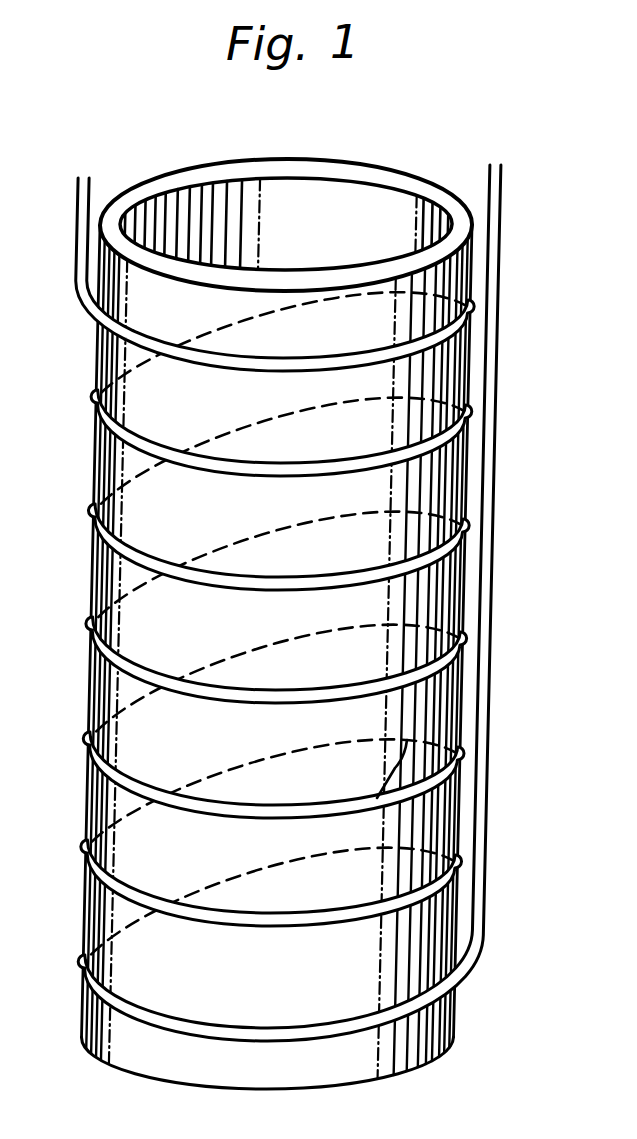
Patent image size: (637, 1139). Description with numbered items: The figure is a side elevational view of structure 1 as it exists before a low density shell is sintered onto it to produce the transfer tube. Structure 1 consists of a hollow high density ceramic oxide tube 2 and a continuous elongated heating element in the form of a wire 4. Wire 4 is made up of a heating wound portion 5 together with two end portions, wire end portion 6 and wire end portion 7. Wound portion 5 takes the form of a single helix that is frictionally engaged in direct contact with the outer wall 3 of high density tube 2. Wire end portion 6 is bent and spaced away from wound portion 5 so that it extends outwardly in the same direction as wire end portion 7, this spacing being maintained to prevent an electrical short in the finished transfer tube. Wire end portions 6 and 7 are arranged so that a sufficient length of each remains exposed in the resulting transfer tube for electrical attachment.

The structure 1 is at (292, 587).
The high density ceramic oxide tube 2 is at (470, 299).
The outer wall 3 is at (467, 474).
The wire 4 is at (122, 347).
The heating wound portion 5 is at (404, 757).
The wire end portion 6 is at (501, 203).
The wire end portion 7 is at (76, 187).